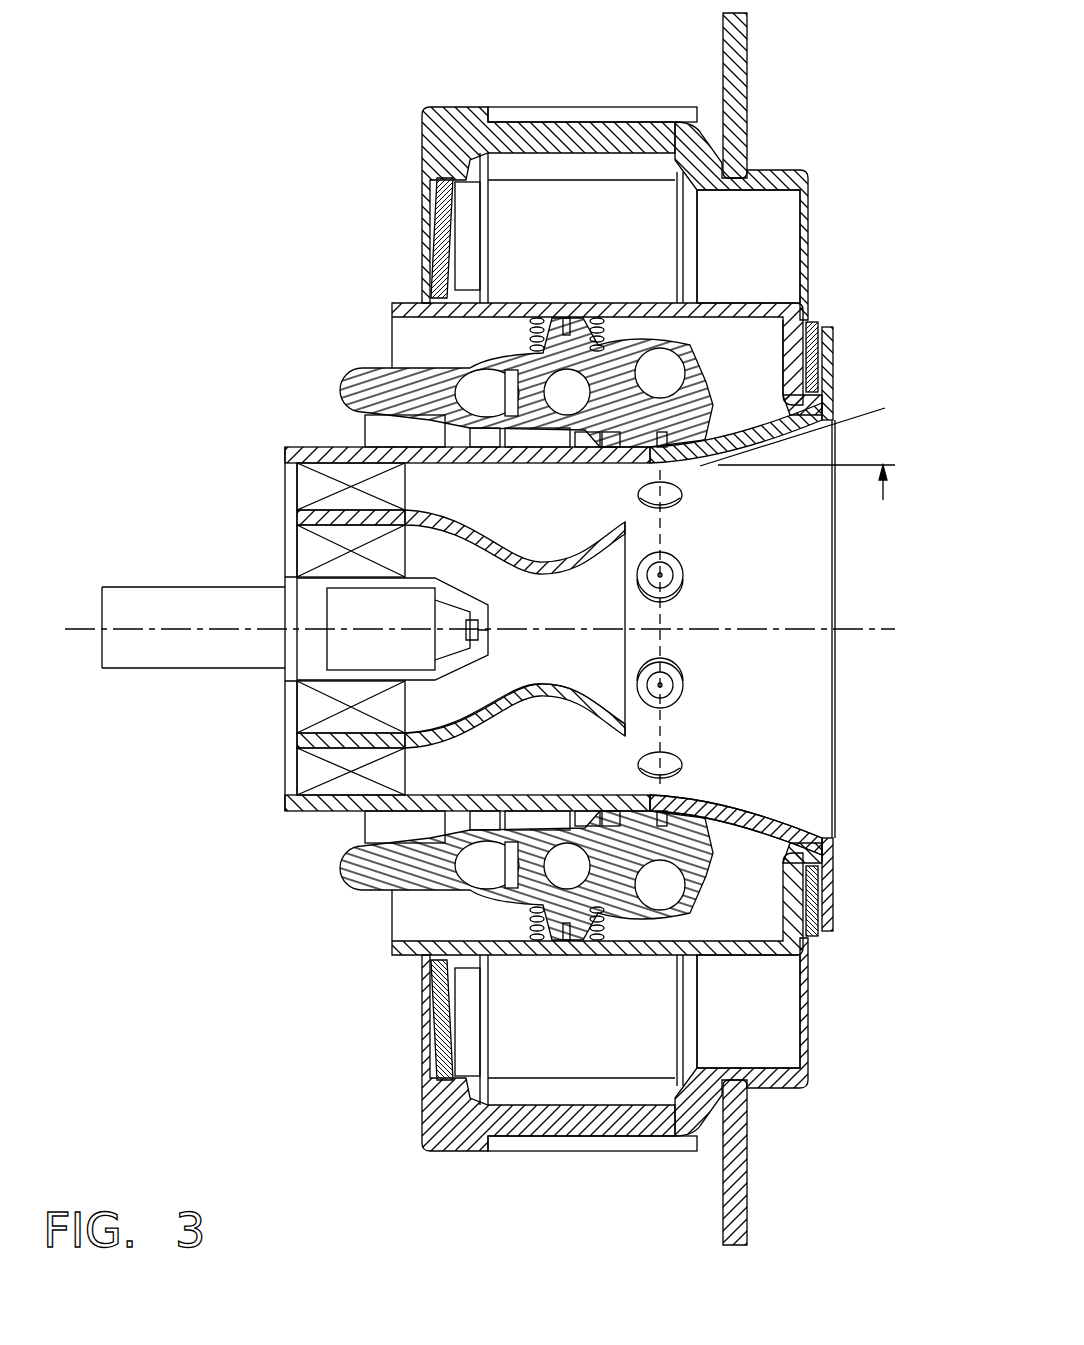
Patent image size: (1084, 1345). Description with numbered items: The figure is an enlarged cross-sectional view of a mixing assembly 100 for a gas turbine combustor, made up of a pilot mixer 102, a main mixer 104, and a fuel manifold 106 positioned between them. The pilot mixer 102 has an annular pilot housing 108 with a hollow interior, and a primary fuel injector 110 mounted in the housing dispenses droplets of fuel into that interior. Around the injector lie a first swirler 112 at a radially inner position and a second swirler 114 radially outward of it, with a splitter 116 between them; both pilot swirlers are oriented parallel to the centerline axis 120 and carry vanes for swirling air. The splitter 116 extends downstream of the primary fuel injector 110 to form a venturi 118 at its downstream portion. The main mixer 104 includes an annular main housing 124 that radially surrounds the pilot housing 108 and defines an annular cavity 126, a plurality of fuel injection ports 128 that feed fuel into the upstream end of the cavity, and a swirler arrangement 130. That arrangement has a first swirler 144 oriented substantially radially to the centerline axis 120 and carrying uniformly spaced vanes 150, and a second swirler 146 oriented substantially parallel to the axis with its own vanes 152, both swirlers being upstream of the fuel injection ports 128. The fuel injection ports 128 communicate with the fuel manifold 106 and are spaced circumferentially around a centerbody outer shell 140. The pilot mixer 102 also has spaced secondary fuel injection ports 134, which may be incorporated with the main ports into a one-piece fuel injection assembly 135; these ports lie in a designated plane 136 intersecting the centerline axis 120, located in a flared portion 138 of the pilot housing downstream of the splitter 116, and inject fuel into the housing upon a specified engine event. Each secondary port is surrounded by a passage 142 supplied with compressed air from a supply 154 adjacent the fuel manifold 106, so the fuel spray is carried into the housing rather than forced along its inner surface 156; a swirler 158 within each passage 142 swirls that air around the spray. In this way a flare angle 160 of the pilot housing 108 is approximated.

The mixing assembly 100 is at (285, 70).
The pilot mixer 102 is at (805, 537).
The main mixer 104 is at (818, 256).
The fuel manifold 106 is at (484, 382).
The pilot housing 108 is at (795, 830).
The primary fuel injector 110 is at (482, 595).
The first swirler 112 is at (310, 712).
The second swirler 114 is at (300, 770).
The splitter 116 is at (305, 740).
The venturi 118 is at (520, 698).
The centerline axis 120 is at (697, 633).
The main housing 124 is at (762, 163).
The annular cavity 126 is at (763, 240).
The fuel injection ports 128 is at (597, 318).
The swirler arrangement 130 is at (408, 150).
The secondary fuel injection ports 134 is at (678, 572).
The fuel injection assembly 135 is at (692, 340).
The plane 136 is at (668, 755).
The flared portion 138 is at (768, 802).
The centerbody outer shell 140 is at (805, 312).
The passage 142 is at (672, 497).
The first swirler 144 is at (570, 104).
The second swirler 146 is at (432, 217).
The vanes 150 is at (590, 1142).
The vanes 152 is at (470, 1030).
The supply 154 is at (733, 410).
The inner surface 156 is at (460, 465).
The swirler 158 is at (612, 440).
The flare angle 160 is at (874, 400).